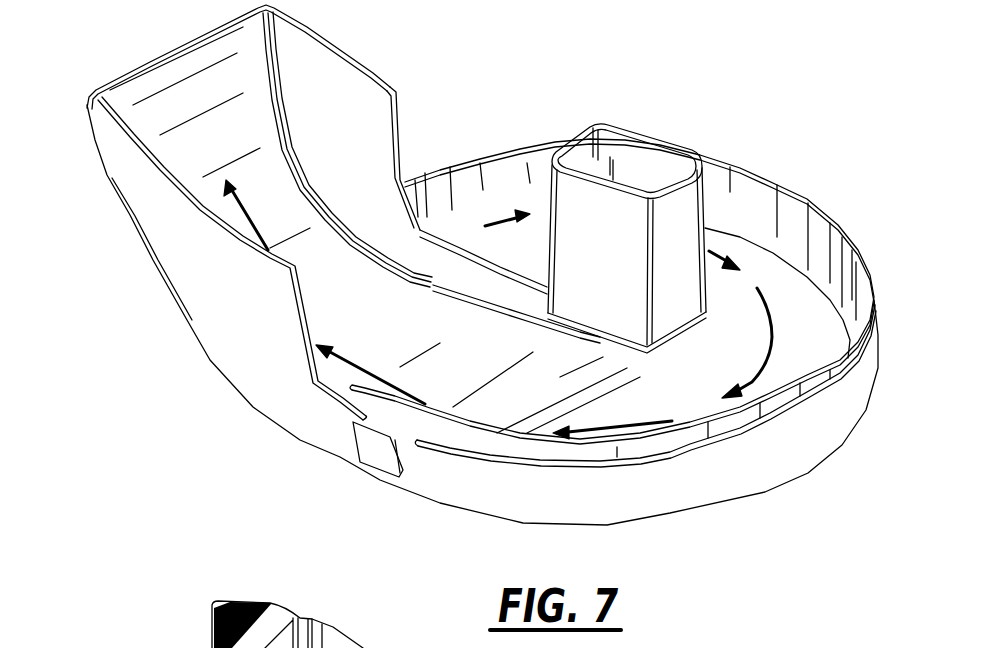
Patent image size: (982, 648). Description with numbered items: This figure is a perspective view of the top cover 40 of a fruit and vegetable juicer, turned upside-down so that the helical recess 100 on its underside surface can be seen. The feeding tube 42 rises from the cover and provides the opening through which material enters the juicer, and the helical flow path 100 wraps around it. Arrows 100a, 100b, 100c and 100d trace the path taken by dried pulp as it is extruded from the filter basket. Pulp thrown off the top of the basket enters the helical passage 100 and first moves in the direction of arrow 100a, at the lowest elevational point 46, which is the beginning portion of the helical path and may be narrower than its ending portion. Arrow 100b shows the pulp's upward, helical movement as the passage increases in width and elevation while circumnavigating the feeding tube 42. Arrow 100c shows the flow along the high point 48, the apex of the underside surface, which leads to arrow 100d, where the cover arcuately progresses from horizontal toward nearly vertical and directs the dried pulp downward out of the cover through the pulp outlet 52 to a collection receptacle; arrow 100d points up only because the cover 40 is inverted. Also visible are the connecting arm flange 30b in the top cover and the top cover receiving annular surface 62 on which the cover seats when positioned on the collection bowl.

The top cover 40 is at (778, 478).
The feeding tube 42 is at (609, 265).
The lowest elevational point 46 is at (529, 256).
The high point 48 is at (387, 347).
The pulp outlet 52 is at (150, 290).
The top cover receiving annular surface 62 is at (822, 365).
The connecting arm flange 30b is at (382, 458).
The helical recess 100 is at (617, 392).
The arrow indicating initial flow direction 100a is at (497, 230).
The arrow indicating upward helical movement 100b is at (772, 321).
The arrow indicating flow along highest point 100c is at (338, 367).
The arrow indicating downward turning flow path 100d is at (245, 222).